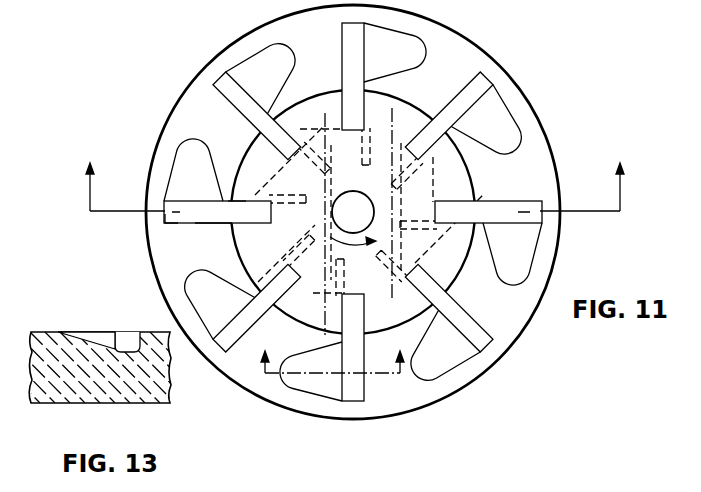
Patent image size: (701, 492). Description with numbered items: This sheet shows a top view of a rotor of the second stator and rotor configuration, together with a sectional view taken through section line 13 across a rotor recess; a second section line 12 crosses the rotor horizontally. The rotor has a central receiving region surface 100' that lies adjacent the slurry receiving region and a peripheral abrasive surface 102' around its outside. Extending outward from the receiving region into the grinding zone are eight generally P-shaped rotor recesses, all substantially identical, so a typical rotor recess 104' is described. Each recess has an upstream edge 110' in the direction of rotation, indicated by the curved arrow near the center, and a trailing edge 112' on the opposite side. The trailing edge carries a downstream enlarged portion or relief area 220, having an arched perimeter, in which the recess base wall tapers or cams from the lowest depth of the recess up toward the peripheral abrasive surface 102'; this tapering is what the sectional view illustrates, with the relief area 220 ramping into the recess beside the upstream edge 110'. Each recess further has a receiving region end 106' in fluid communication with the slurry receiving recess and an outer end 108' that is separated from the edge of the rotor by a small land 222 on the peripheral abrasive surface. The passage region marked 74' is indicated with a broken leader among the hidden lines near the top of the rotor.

In FIG. 11, the passage 74' is at (406, 132).
In FIG. 11, the central receiving region surface 100' is at (353, 212).
In FIG. 11, the peripheral abrasive surface 102' is at (456, 212).
In FIG. 11, the rotor recess 104' is at (231, 212).
In FIG. 11, the receiving region end 106' is at (294, 211).
In FIG. 11, the outer end 108' is at (187, 204).
In FIG. 11, the upstream edge 110' is at (213, 237).
In FIG. 13, the upstream edge 110' is at (133, 328).
In FIG. 11, the trailing edge 112' is at (234, 168).
In FIG. 11, the relief area 220 is at (210, 185).
In FIG. 13, the relief area 220 is at (109, 329).
In FIG. 11, the land 222 is at (163, 223).
In FIG. 11, the section line 12 is at (357, 177).
In FIG. 11, the section line 13 is at (334, 353).